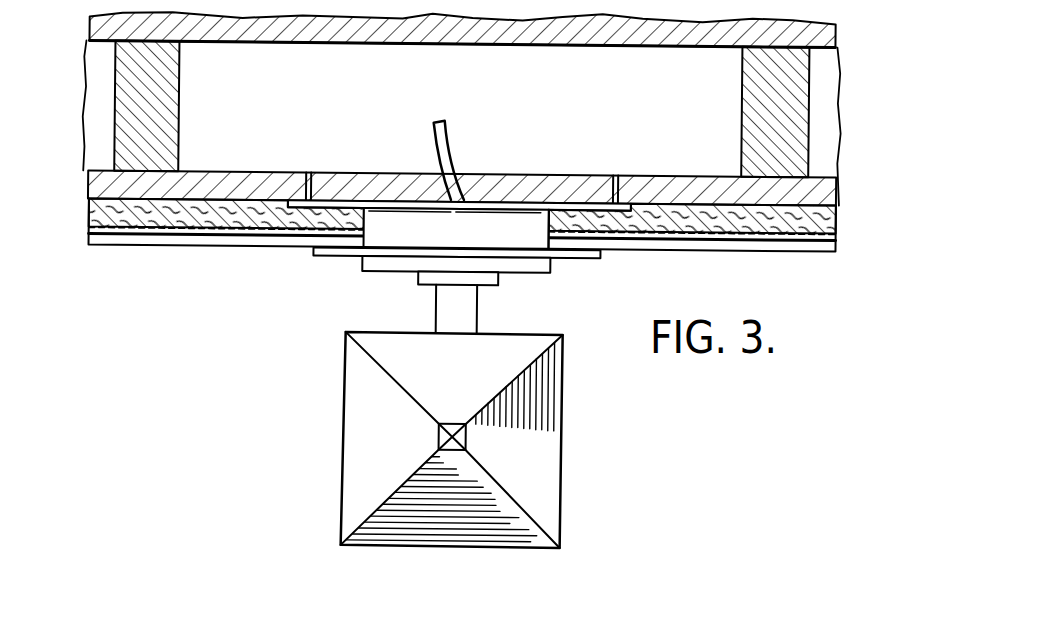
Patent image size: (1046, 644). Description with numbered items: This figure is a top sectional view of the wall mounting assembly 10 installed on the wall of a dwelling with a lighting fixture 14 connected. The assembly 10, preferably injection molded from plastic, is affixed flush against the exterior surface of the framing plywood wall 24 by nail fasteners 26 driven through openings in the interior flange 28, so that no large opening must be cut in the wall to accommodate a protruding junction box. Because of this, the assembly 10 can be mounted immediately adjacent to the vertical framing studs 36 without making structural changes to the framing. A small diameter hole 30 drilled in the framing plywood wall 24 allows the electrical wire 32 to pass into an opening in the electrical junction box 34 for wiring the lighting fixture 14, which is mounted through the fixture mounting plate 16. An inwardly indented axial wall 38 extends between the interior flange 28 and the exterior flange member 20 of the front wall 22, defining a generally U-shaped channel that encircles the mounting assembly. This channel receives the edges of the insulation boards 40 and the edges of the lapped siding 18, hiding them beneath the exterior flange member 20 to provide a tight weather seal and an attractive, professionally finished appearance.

The wall mounting assembly 10 is at (284, 401).
The lighting fixture 14 is at (565, 375).
The fixture mounting plate 16 is at (376, 272).
The lapped siding 18 is at (187, 236).
The exterior flange member 20 is at (574, 257).
The front wall 22 is at (325, 257).
The framing plywood wall 24 is at (90, 184).
The nail fasteners 26 is at (300, 186).
The interior flange 28 is at (555, 222).
The small diameter hole 30 is at (424, 200).
The electrical wire 32 is at (445, 128).
The electrical junction box 34 is at (395, 222).
The vertical framing studs 36 is at (163, 82).
The inwardly indented axial wall 38 is at (496, 225).
The insulation boards 40 is at (88, 210).